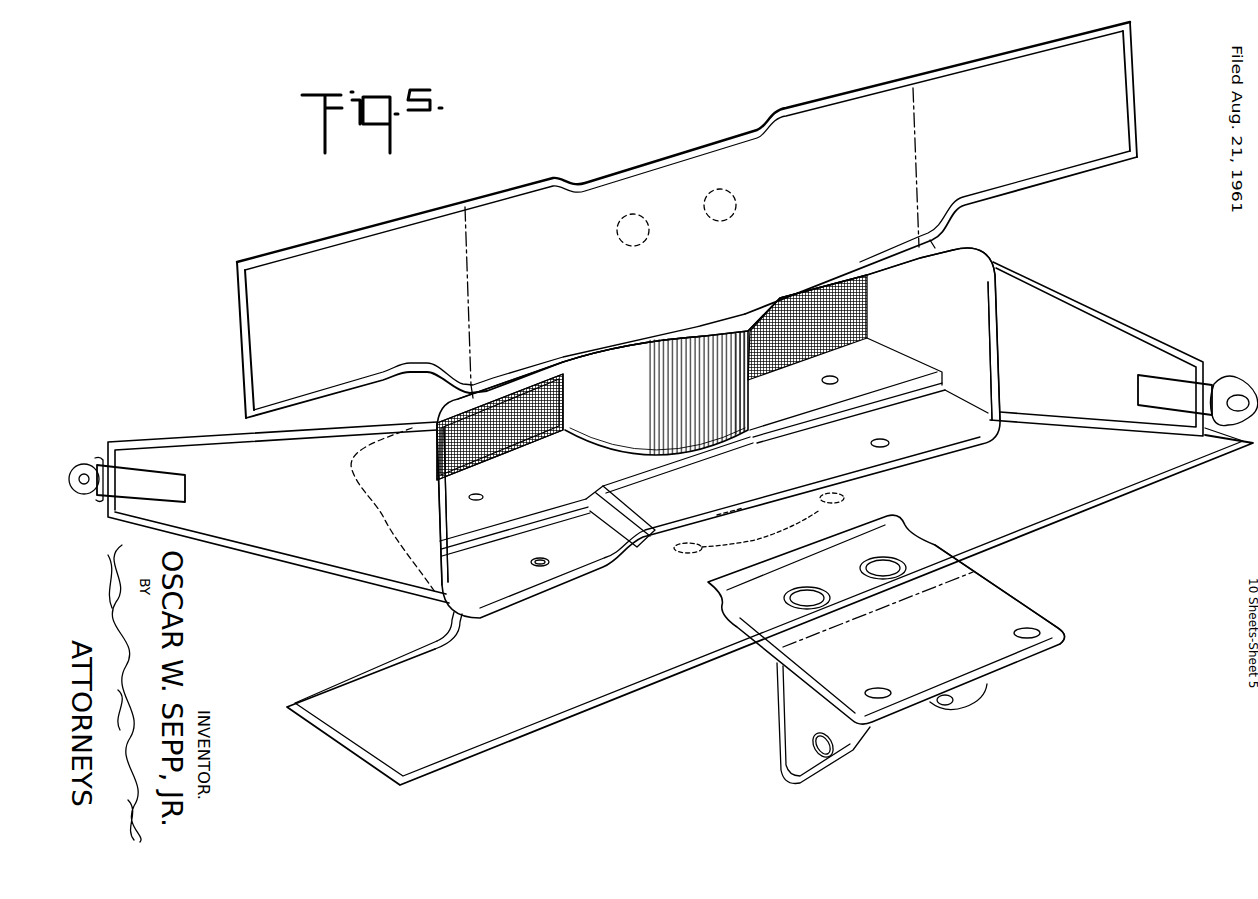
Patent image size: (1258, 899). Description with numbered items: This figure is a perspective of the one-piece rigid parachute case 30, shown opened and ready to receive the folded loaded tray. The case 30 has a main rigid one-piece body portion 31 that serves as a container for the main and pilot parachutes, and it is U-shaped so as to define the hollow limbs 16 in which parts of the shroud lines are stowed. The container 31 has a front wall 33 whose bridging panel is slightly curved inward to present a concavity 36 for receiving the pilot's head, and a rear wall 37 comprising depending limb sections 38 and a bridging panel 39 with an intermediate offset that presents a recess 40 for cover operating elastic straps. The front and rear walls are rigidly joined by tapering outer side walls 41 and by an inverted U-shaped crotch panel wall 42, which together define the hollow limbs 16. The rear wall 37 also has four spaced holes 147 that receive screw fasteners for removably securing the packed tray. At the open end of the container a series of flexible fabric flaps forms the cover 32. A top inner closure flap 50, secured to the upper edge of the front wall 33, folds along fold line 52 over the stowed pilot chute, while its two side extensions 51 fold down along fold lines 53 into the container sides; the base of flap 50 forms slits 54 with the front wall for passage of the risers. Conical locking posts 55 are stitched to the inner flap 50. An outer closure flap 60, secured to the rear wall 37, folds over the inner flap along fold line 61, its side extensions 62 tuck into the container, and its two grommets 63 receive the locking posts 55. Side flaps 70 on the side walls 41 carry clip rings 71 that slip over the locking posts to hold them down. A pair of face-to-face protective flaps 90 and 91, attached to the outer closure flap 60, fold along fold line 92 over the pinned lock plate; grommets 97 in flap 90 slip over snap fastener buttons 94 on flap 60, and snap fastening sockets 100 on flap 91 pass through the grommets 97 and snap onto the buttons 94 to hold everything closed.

The hollow limbs 16 is at (524, 410).
The case 30 is at (1002, 255).
The main rigid one-piece body portion 31 is at (447, 590).
The cover 32 is at (560, 745).
The front wall 33 is at (600, 355).
The concavity 36 is at (718, 330).
The rear wall 37 is at (935, 422).
The limb sections 38 is at (812, 405).
The bridging panel 39 is at (605, 547).
The recess 40 is at (728, 515).
The outer side walls 41 is at (965, 304).
The crotch panel wall 42 is at (640, 366).
The top inner closure flap 50 is at (656, 160).
The side extensions 51 is at (318, 272).
The fold line 52 is at (508, 384).
The fold lines 53 is at (468, 295).
The slits 54 is at (447, 398).
The conical locking posts 55 is at (633, 214).
The outer closure flap 60 is at (608, 665).
The fold line 61 is at (530, 607).
The side extensions 62 is at (1138, 462).
The grommets 63 is at (900, 565).
The side flaps 70 is at (1080, 335).
The clip rings 71 is at (1232, 385).
The protective flap 90 is at (983, 690).
The second protective flap 91 is at (1040, 618).
The fold line 92 is at (972, 575).
The snap fastener buttons 94 is at (727, 542).
The grommets 97 is at (946, 706).
The snap fastening sockets 100 is at (1036, 636).
The spaced holes 147 is at (838, 378).